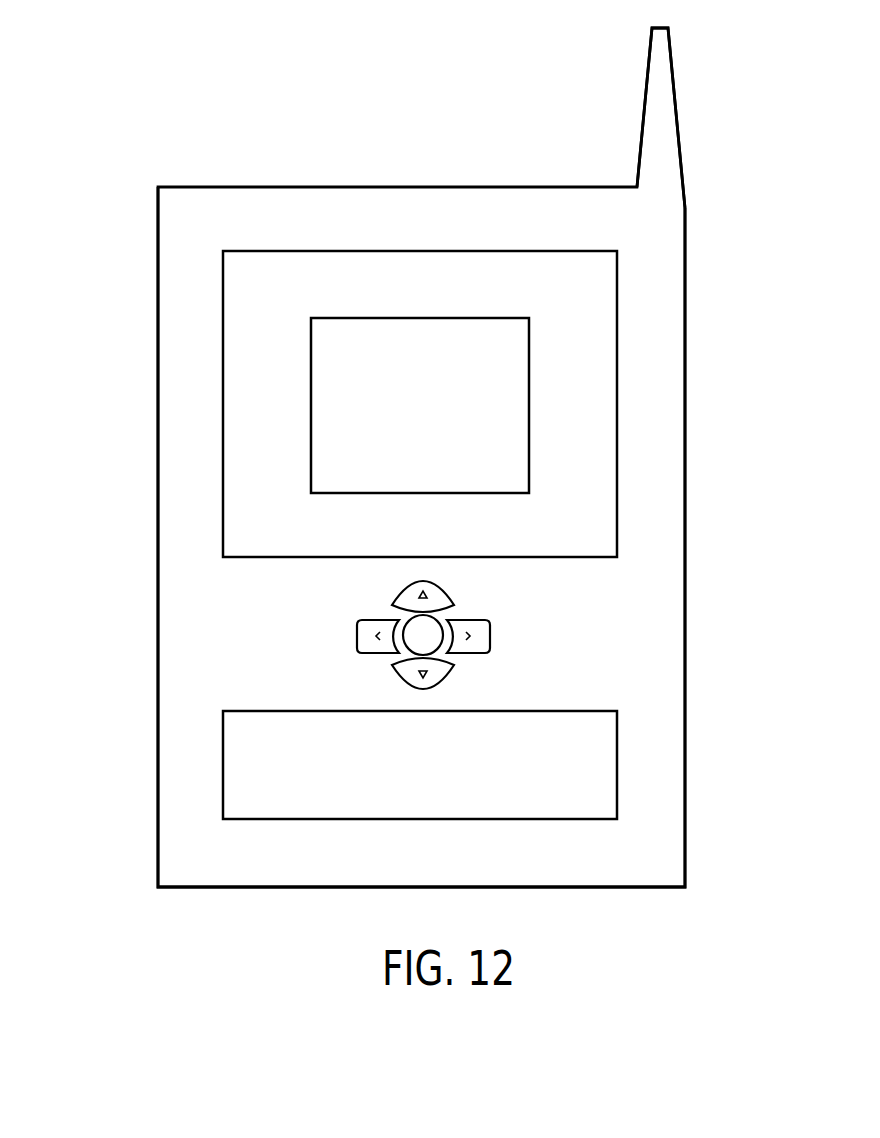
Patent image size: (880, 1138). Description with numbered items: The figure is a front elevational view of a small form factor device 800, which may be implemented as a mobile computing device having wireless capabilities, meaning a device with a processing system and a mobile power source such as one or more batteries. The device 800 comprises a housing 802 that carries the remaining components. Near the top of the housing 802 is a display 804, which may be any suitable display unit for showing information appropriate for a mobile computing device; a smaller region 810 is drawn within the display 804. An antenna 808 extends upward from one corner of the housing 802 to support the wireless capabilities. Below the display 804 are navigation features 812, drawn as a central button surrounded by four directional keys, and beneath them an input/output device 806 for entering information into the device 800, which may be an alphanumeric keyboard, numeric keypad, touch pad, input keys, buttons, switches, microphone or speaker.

The small form factor device 800 is at (158, 129).
The housing 802 is at (158, 627).
The display 804 is at (617, 308).
The input/output (I/O) device 806 is at (617, 764).
The antenna 808 is at (645, 108).
The display window 810 is at (420, 318).
The navigation features 812 is at (518, 635).